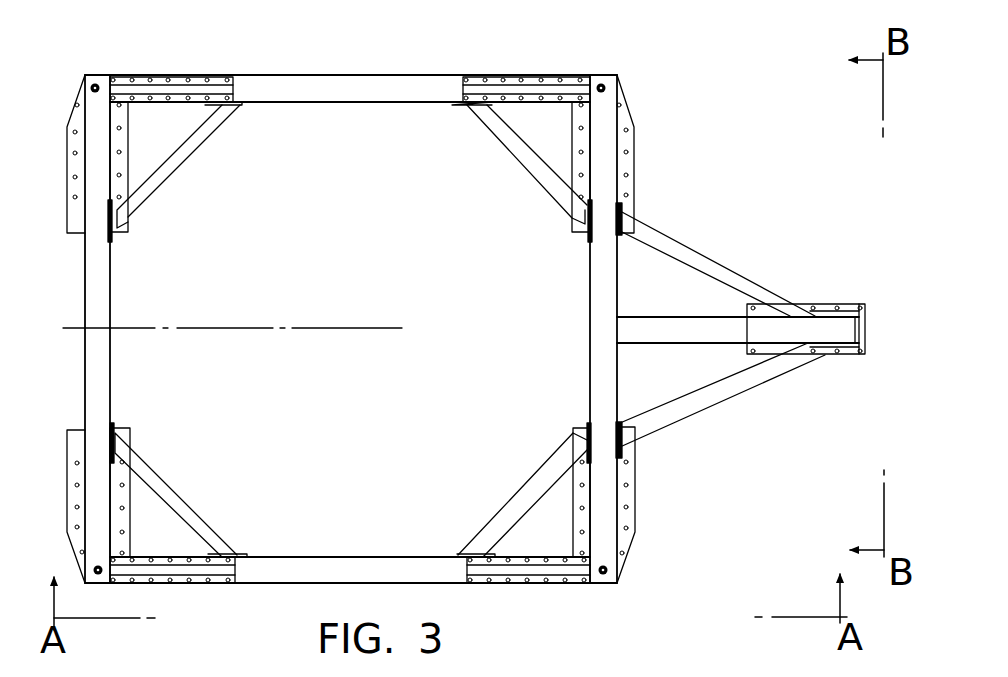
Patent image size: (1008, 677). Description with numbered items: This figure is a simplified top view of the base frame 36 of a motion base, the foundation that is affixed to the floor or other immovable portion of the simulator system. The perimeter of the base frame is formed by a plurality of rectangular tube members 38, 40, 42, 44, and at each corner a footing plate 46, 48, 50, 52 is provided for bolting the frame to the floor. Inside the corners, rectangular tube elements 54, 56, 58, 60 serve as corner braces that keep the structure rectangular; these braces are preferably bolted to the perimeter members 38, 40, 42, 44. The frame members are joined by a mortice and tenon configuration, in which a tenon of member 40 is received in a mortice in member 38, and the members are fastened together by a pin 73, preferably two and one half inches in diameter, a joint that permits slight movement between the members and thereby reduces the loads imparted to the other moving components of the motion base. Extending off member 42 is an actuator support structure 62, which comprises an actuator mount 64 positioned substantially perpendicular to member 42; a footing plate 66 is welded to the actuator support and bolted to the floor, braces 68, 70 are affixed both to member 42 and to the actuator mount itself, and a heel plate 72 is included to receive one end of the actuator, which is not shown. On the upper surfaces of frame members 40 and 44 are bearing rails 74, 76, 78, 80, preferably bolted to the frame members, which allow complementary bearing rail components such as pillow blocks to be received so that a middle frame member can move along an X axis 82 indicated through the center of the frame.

The base frame 36 is at (733, 124).
The rectangular tube member 38 is at (90, 287).
The rectangular tube member 40 is at (397, 84).
The rectangular tube member 42 is at (603, 283).
The rectangular tube member 44 is at (327, 578).
The footing plate 46 is at (72, 167).
The footing plate 48 is at (627, 163).
The footing plate 50 is at (630, 497).
The footing plate 52 is at (73, 513).
The rectangular tube element 54 is at (178, 156).
The rectangular tube element 56 is at (527, 163).
The rectangular tube element 58 is at (515, 509).
The rectangular tube element 60 is at (192, 519).
The actuator support structure 62 is at (765, 335).
The actuator mount 64 is at (672, 334).
The footing plate 66 is at (800, 358).
The brace 68 is at (718, 264).
The brace 70 is at (693, 398).
The heel plate 72 is at (866, 327).
The pin 73 is at (95, 83).
The bearing rail 74 is at (197, 77).
The bearing rail 76 is at (497, 77).
The bearing rail 78 is at (520, 583).
The bearing rail 80 is at (223, 581).
The X axis 82 is at (330, 305).